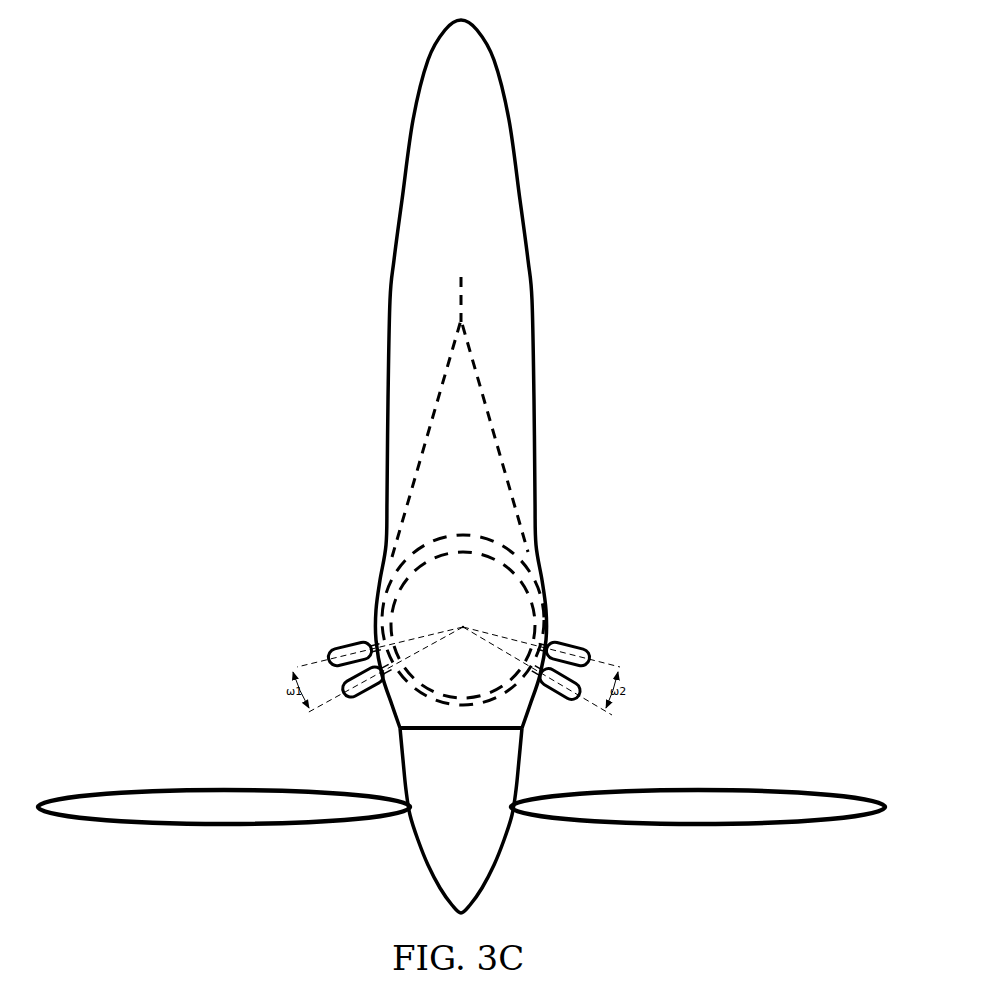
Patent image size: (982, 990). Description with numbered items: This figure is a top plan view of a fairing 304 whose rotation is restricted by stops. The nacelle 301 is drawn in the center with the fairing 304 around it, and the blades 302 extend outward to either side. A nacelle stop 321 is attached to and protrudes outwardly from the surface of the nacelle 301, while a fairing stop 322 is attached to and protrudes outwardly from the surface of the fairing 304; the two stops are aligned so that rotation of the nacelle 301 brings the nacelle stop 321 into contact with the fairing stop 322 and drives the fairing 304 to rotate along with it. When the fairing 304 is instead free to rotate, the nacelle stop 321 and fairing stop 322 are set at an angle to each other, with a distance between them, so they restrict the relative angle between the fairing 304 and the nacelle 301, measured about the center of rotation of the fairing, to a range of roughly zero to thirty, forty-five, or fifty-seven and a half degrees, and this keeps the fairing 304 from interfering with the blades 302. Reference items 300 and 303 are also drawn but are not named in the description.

The rotor 300 is at (512, 558).
The nacelle 301 is at (543, 382).
The blades 302 is at (168, 828).
The tail section 303 is at (495, 866).
The fairing 304 is at (428, 409).
The nacelle stop 321 is at (368, 700).
The fairing stop 322 is at (337, 645).